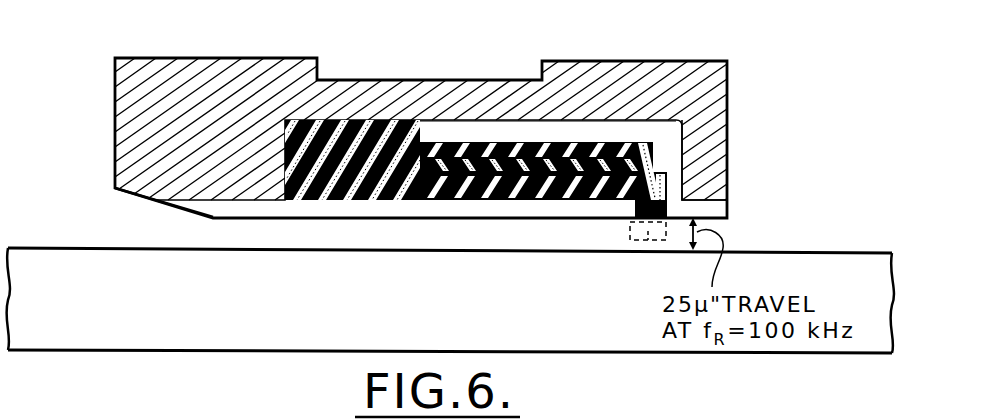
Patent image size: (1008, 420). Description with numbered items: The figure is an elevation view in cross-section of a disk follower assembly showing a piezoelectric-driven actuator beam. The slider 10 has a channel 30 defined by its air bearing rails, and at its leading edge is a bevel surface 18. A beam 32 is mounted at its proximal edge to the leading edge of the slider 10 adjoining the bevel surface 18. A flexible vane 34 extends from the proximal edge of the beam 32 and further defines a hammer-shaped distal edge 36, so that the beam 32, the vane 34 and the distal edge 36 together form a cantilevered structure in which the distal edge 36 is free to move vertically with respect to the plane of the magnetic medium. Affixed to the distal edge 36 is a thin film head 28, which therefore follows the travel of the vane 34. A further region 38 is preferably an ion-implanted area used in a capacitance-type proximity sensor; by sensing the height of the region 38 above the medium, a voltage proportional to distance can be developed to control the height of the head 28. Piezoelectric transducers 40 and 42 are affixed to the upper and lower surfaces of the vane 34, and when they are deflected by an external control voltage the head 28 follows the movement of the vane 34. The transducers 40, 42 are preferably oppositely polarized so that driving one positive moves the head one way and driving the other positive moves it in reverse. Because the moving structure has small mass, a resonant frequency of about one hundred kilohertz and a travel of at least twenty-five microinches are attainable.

The slider 10 is at (215, 58).
The bevel surface 18 is at (172, 206).
The thin film head 28 is at (667, 190).
The channel 30 is at (727, 108).
The beam 32 is at (331, 198).
The flexible vane 34 is at (563, 182).
The hammer-shaped distal edge 36 is at (655, 157).
The ion-implanted region 38 is at (635, 207).
The piezoelectric transducer 40 is at (517, 142).
The piezoelectric transducer 42 is at (472, 200).